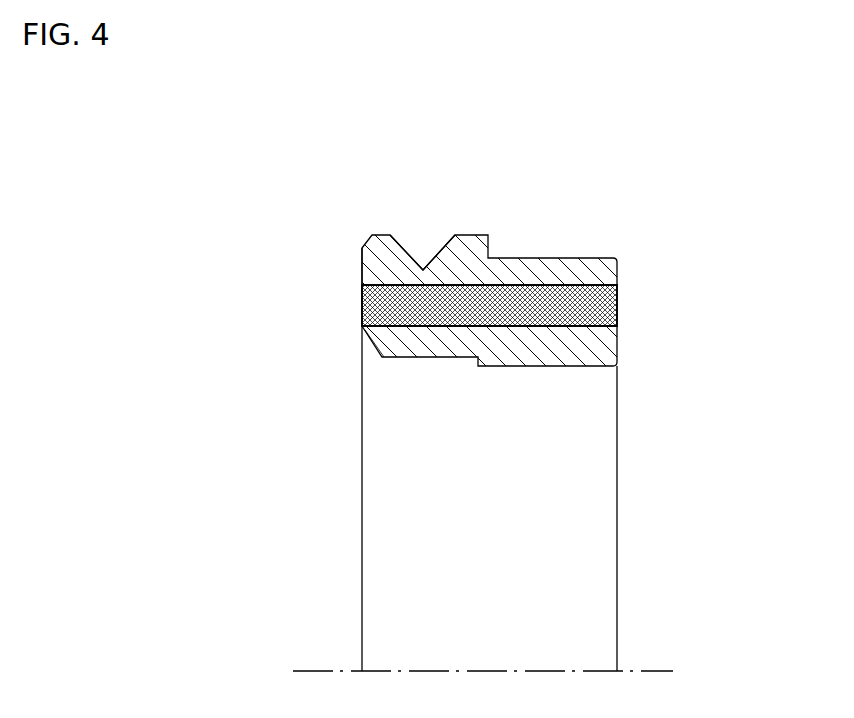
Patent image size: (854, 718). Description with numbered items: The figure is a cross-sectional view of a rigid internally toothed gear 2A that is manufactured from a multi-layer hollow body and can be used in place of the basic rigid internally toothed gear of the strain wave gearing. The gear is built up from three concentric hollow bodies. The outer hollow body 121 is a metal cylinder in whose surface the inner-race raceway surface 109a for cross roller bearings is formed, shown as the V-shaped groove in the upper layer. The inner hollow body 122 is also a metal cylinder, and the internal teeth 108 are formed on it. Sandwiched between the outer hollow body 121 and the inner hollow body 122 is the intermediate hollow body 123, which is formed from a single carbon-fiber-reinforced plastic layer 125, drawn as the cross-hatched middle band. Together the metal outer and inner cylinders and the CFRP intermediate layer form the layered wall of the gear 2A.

The rigid internally toothed gear 2A is at (322, 288).
The internal teeth 108 is at (570, 367).
The inner-race raceway surface 109a is at (437, 255).
The outer hollow body 121 is at (610, 272).
The inner hollow body 122 is at (620, 340).
The intermediate hollow body 123 is at (620, 297).
The carbon-fiber-reinforced plastic layer 125 is at (489, 305).